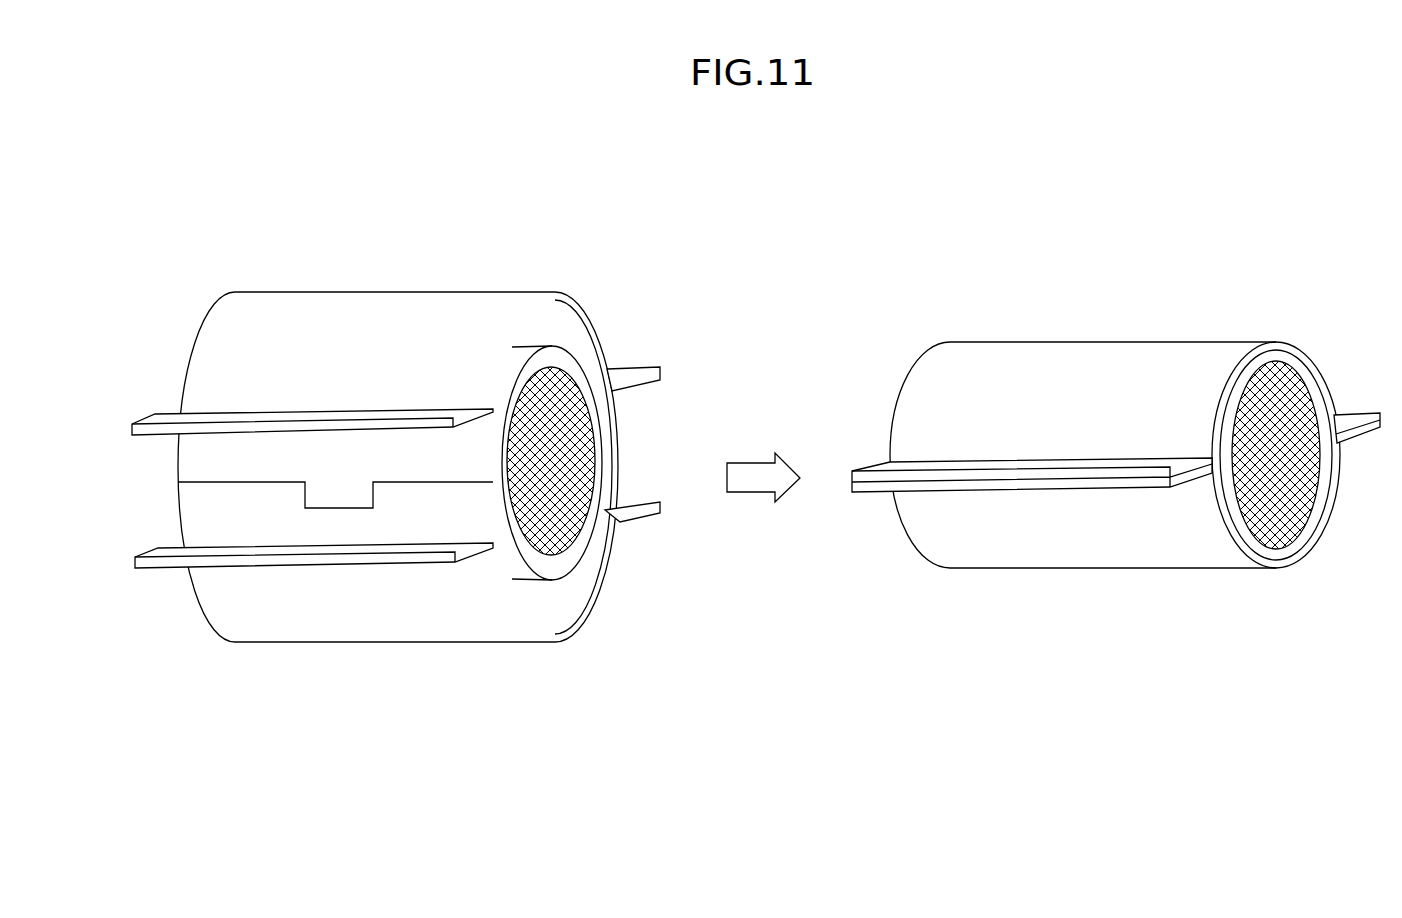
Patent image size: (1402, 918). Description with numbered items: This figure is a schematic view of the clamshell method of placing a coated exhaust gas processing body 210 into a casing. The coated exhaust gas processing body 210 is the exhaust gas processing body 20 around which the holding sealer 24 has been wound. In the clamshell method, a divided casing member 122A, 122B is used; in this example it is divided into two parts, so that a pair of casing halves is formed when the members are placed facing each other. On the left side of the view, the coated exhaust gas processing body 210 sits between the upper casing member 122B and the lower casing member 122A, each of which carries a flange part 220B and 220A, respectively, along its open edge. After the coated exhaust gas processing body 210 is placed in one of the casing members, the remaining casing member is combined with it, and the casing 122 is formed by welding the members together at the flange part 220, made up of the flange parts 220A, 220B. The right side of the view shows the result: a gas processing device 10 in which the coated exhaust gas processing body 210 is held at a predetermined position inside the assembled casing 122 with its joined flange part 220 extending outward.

The gas processing device 10 is at (1112, 363).
The exhaust gas processing body 20 is at (598, 480).
The holding sealer 24 is at (183, 458).
The casing 122 is at (1108, 342).
The casing member 122A is at (405, 643).
The casing member 122B is at (386, 294).
The coated exhaust gas processing body 210 is at (613, 440).
The flange part 220 is at (860, 462).
The flange part 220A is at (160, 547).
The flange part 220B is at (158, 412).